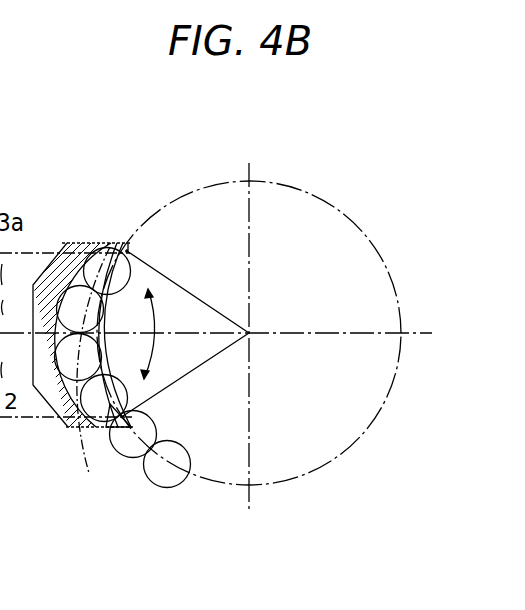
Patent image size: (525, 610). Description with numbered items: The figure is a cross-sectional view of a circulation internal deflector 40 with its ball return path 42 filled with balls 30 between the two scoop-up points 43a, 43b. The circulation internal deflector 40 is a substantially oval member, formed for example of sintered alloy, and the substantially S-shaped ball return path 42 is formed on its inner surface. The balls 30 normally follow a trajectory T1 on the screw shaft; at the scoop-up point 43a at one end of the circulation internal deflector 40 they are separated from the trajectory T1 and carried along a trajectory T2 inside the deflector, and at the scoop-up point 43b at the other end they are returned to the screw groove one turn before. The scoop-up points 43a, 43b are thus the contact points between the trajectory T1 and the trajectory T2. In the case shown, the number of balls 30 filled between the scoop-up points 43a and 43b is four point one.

The balls 30 is at (163, 481).
The circulation internal deflector 40 is at (63, 243).
The ball return path 42 is at (109, 252).
The scoop-up point 43a is at (128, 250).
The scoop-up point 43b is at (124, 417).
The trajectory of the balls on the screw shaft T1 is at (390, 400).
The trajectory of the balls in the circulation internal deflector T2 is at (93, 373).